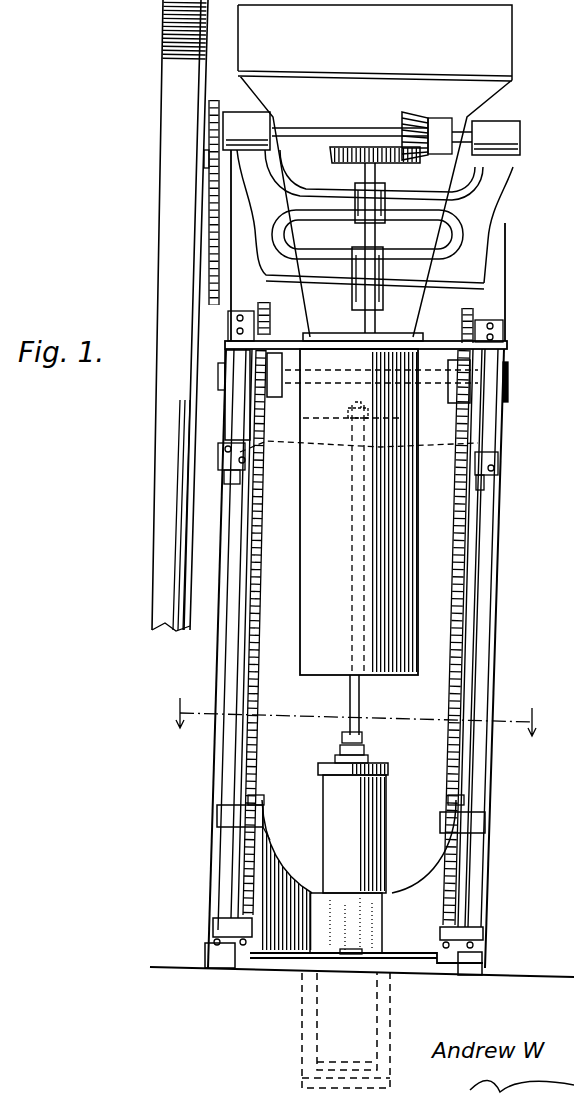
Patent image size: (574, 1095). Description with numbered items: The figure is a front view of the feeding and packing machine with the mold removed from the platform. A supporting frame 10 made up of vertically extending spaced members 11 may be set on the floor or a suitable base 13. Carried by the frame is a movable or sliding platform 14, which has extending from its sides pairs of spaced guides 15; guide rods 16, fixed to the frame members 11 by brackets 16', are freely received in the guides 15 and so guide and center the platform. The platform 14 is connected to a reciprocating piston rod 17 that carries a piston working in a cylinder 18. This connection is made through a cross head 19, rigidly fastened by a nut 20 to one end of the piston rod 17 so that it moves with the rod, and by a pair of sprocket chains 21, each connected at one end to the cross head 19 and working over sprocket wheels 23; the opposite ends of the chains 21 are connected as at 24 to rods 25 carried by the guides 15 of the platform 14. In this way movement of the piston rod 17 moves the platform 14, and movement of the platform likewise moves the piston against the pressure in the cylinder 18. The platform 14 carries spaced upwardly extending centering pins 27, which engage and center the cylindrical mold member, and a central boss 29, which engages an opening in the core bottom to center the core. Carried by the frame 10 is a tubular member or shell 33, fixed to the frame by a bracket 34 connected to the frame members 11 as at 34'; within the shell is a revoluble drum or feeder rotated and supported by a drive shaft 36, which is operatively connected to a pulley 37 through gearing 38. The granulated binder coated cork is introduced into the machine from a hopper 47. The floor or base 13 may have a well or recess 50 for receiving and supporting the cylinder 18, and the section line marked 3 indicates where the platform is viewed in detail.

The hopper 47 is at (503, 66).
The pulley 37 is at (170, 103).
The gearing 38 is at (407, 118).
The drive shaft 36 is at (374, 248).
The vertically extending spaced bars or members 11 is at (497, 270).
The sprocket wheels 23 is at (267, 323).
The bracket 34 is at (366, 324).
The connection of bracket to frame members 34' is at (515, 331).
The cross head 19 is at (453, 436).
The nut 20 is at (368, 408).
The tubular member or shell 33 is at (406, 634).
The brackets 16' is at (328, 708).
The guide rods 16 is at (498, 638).
The supporting frame 10 is at (510, 658).
The sprocket chains 21 is at (253, 672).
The piston rod 17 is at (360, 706).
The section line 3 is at (353, 717).
The connection of chain ends to rods 24 is at (246, 791).
The guides 15 is at (220, 816).
The cylinder 18 is at (378, 857).
The rods 25 is at (453, 898).
The centering pins 27 is at (299, 963).
The central boss 29 is at (347, 955).
The movable or sliding platform 14 is at (413, 958).
The base 13 is at (189, 972).
The well or recess 50 is at (302, 1022).